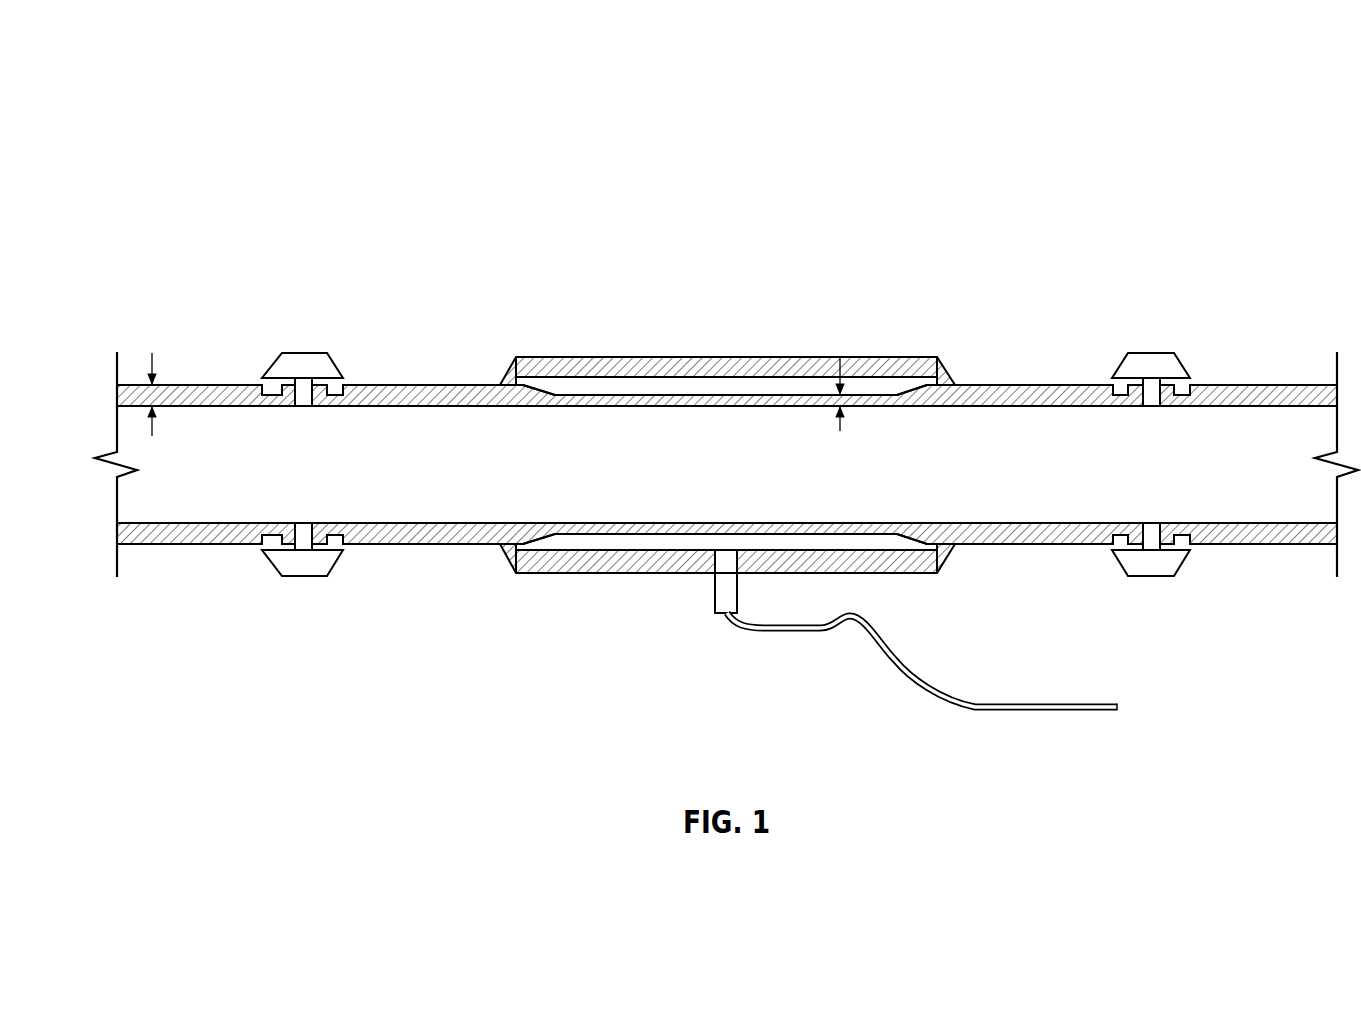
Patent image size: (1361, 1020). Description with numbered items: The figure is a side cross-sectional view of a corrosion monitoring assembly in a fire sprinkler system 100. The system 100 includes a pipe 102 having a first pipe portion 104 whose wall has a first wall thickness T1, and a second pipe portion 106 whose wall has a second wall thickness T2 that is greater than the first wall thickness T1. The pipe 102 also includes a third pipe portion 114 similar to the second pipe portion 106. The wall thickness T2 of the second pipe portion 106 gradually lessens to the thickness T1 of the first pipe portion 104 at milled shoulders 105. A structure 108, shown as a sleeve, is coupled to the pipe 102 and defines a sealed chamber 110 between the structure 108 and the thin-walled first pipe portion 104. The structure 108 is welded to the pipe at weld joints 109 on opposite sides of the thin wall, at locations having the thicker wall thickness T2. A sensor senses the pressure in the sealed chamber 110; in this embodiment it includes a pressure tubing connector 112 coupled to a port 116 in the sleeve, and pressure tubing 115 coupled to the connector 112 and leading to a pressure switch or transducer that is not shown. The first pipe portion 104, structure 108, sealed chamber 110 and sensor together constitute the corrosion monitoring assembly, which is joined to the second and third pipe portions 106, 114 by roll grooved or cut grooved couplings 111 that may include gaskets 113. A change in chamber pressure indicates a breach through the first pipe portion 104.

The fire sprinkler system 100 is at (350, 152).
The pipe 102 is at (100, 435).
The first pipe portion 104 is at (730, 406).
The milled shoulders 105 is at (537, 395).
The second pipe portion 106 is at (222, 385).
The structure 108 is at (840, 357).
The weld joints 109 is at (945, 377).
The sealed chamber 110 is at (642, 540).
The couplings 111 is at (273, 537).
The pressure tubing connector 112 is at (726, 547).
The gaskets 113 is at (305, 407).
The third pipe portion 114 is at (1287, 385).
The pressure tubing 115 is at (1000, 713).
The port 116 is at (711, 575).
The first wall thickness T1 is at (841, 427).
The second wall thickness T2 is at (152, 366).